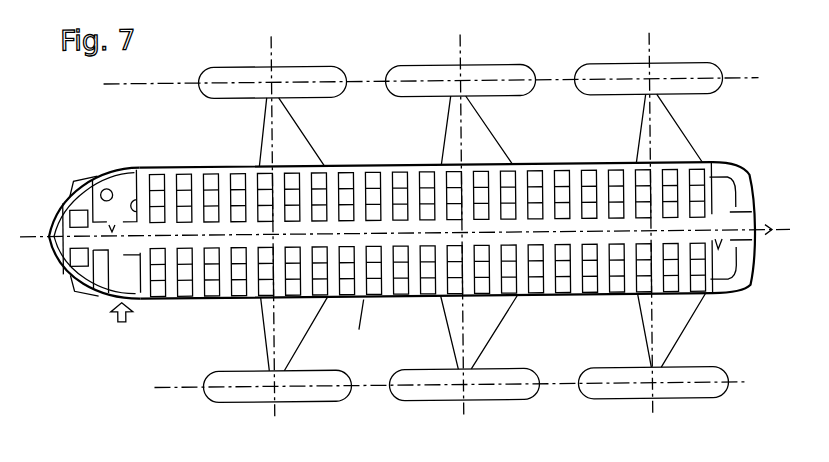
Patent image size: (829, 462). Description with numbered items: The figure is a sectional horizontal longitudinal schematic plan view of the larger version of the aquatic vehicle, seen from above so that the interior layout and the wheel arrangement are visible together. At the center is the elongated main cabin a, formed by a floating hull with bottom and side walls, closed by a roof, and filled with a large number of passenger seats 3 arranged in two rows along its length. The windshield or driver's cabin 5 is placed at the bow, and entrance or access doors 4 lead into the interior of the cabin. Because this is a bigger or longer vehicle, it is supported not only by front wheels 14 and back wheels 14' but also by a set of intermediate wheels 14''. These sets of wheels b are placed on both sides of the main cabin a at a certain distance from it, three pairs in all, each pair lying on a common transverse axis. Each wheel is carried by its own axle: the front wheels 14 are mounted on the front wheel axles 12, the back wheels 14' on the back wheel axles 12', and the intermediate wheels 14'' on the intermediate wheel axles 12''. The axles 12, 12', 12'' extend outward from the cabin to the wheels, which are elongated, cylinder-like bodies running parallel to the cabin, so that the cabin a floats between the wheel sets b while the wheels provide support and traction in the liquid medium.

The front wheels 14 is at (274, 221).
The back wheels 14' is at (651, 216).
The intermediate wheels 14'' is at (462, 218).
The front wheel axles 12 is at (266, 234).
The back wheel axles 12' is at (650, 231).
The intermediate wheel axles 12'' is at (458, 233).
The seats 3 is at (590, 176).
The windshield in driver's cabin 5 is at (50, 227).
The doors 4 is at (122, 326).
The main cabin a is at (358, 158).
The sets of wheels b is at (382, 61).